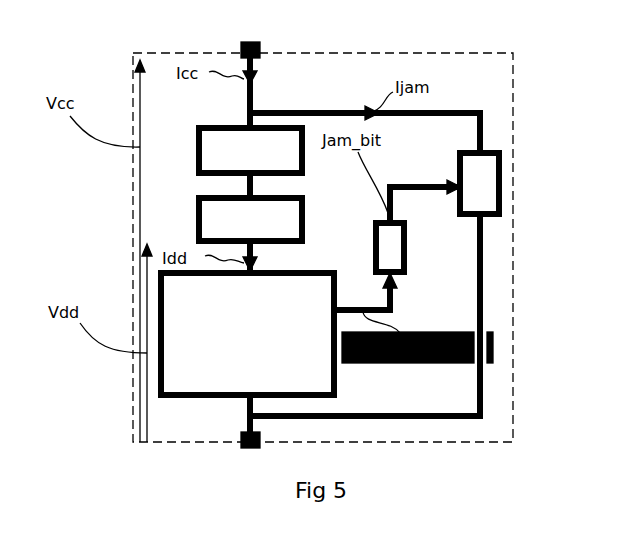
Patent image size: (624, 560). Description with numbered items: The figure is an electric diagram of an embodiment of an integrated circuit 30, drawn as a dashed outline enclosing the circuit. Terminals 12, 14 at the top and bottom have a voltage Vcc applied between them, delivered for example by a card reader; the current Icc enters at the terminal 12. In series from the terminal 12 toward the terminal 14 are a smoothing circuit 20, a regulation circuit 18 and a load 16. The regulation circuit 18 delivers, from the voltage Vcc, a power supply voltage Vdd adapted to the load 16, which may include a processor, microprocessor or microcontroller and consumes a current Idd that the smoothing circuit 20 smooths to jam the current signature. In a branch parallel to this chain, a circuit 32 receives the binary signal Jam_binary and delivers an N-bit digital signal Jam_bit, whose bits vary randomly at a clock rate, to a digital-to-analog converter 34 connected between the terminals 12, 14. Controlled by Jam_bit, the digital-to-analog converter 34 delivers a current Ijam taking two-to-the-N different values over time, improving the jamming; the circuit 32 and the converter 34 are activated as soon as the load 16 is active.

The terminal 12 is at (246, 45).
The terminal 14 is at (245, 450).
The load 16 is at (237, 403).
The regulation circuit 18 is at (197, 239).
The smoothing circuit 20 is at (197, 166).
The integrated circuit 30 is at (513, 72).
The circuit 32 is at (373, 265).
The digital-to-analog converter 34 is at (466, 218).